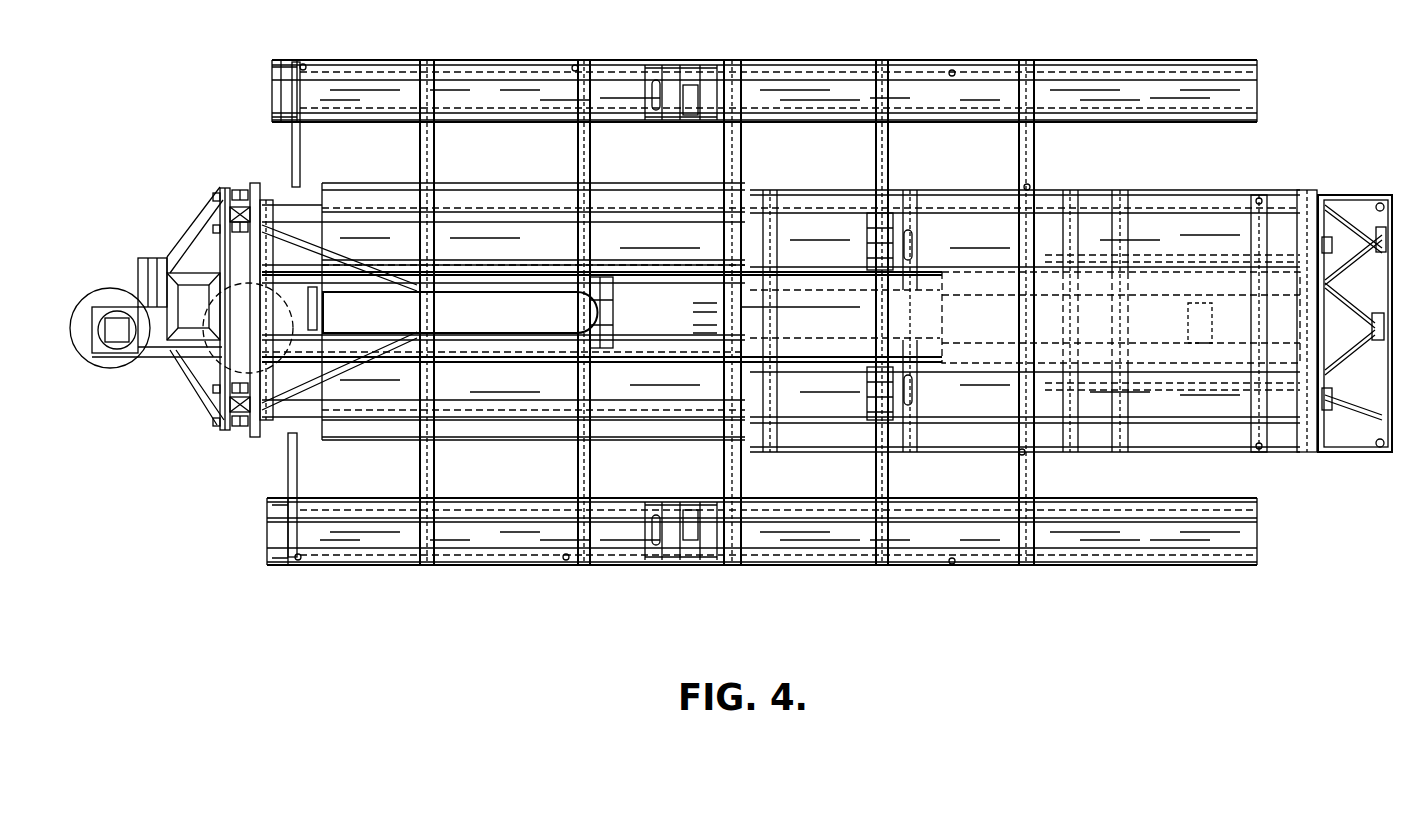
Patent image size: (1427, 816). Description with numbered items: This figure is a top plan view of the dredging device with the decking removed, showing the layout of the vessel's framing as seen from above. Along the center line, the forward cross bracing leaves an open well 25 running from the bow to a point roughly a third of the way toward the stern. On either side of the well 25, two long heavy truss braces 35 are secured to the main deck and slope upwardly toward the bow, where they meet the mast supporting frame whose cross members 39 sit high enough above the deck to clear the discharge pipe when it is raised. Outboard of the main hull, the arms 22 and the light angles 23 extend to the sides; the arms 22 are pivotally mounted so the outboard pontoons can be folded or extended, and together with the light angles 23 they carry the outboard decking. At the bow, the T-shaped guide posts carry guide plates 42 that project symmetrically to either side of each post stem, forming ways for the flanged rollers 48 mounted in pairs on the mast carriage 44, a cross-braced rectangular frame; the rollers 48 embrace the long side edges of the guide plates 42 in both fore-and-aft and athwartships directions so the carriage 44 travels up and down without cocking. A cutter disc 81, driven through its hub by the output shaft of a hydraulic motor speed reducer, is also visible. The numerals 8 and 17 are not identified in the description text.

The trailer frame 8 is at (1242, 176).
The rear end frame 17 is at (1390, 450).
The arms 22 is at (420, 160).
The light angles 23 is at (590, 161).
The well 25 is at (537, 281).
The truss braces 35 is at (640, 266).
The cross members 39 is at (268, 422).
The guide plates 42 is at (217, 425).
The mast carriage 44 is at (175, 218).
The flanged rollers 48 is at (239, 178).
The cutter disc 81 is at (207, 376).